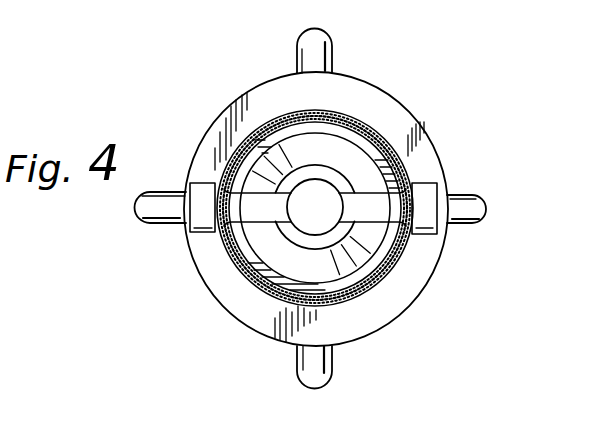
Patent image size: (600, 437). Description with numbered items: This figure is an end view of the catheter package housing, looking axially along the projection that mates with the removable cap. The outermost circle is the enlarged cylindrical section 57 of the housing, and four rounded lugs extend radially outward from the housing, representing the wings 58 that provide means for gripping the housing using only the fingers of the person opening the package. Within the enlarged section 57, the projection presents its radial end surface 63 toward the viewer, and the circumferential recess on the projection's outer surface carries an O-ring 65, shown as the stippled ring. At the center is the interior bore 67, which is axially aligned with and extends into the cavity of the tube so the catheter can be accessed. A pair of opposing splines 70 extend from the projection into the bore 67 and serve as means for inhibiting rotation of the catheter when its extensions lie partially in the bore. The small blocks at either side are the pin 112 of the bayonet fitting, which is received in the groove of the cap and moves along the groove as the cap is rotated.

The enlarged cylindrical section 57 is at (350, 87).
The wings 58 is at (307, 48).
The radial end surface 63 is at (364, 273).
The O-ring 65 is at (397, 270).
The interior bore 67 is at (311, 214).
The splines 70 is at (362, 197).
The pin 112 is at (430, 190).